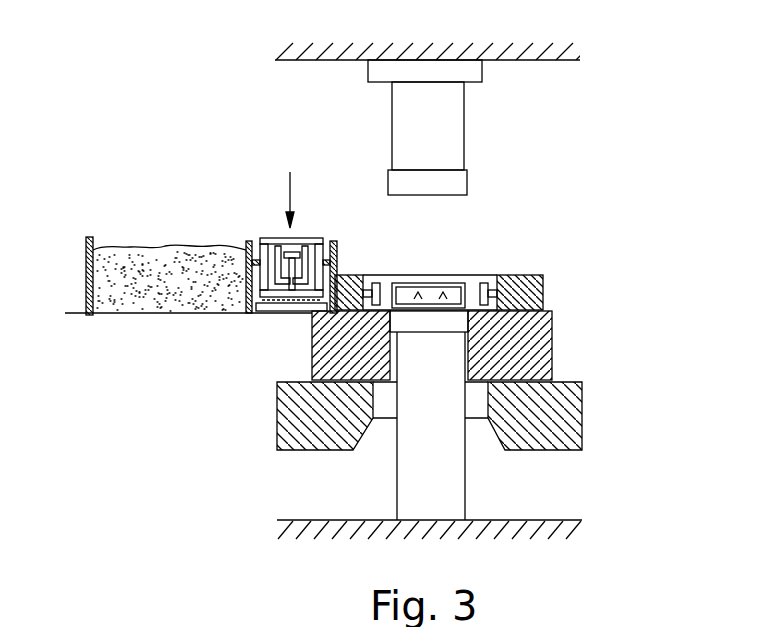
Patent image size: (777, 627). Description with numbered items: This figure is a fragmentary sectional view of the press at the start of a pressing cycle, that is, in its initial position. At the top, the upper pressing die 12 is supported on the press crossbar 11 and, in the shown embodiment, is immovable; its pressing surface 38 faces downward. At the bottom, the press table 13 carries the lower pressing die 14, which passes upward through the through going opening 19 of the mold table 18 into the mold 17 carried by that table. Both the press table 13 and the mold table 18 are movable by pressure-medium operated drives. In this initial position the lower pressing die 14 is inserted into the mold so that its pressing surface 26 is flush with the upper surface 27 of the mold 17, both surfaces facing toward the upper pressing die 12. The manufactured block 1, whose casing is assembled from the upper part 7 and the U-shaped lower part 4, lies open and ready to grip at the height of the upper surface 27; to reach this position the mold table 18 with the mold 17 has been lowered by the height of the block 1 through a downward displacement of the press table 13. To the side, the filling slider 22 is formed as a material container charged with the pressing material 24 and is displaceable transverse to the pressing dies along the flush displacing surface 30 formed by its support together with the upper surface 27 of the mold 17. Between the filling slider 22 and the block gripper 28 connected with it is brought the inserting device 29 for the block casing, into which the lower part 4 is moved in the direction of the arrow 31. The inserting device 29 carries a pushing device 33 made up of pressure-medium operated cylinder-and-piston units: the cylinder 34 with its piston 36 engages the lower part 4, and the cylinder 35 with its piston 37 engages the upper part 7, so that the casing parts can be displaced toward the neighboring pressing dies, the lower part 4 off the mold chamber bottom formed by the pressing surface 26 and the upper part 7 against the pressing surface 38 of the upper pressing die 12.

The block 1 is at (453, 293).
The lower part 4 is at (415, 308).
The upper part 7 is at (437, 285).
The press crossbar 11 is at (522, 17).
The upper pressing die 12 is at (414, 156).
The press table 13 is at (559, 571).
The lower pressing die 14 is at (419, 451).
The mold 17 is at (538, 340).
The mold table 18 is at (563, 410).
The through going opening 19 is at (483, 437).
The filling slider 22 is at (86, 262).
The pressing material 24 is at (118, 256).
The pressing surface 26 is at (444, 311).
The upper surface 27 is at (350, 320).
The block gripper 28 is at (523, 272).
The inserting device 29 is at (289, 186).
The displacing surface 30 is at (228, 316).
The arrow 31 is at (290, 601).
The pushing device 33 is at (329, 240).
The cylinder 34 is at (253, 314).
The cylinder 35 is at (278, 238).
The piston 36 is at (308, 238).
The piston 37 is at (248, 240).
The pressing surface 38 is at (476, 199).